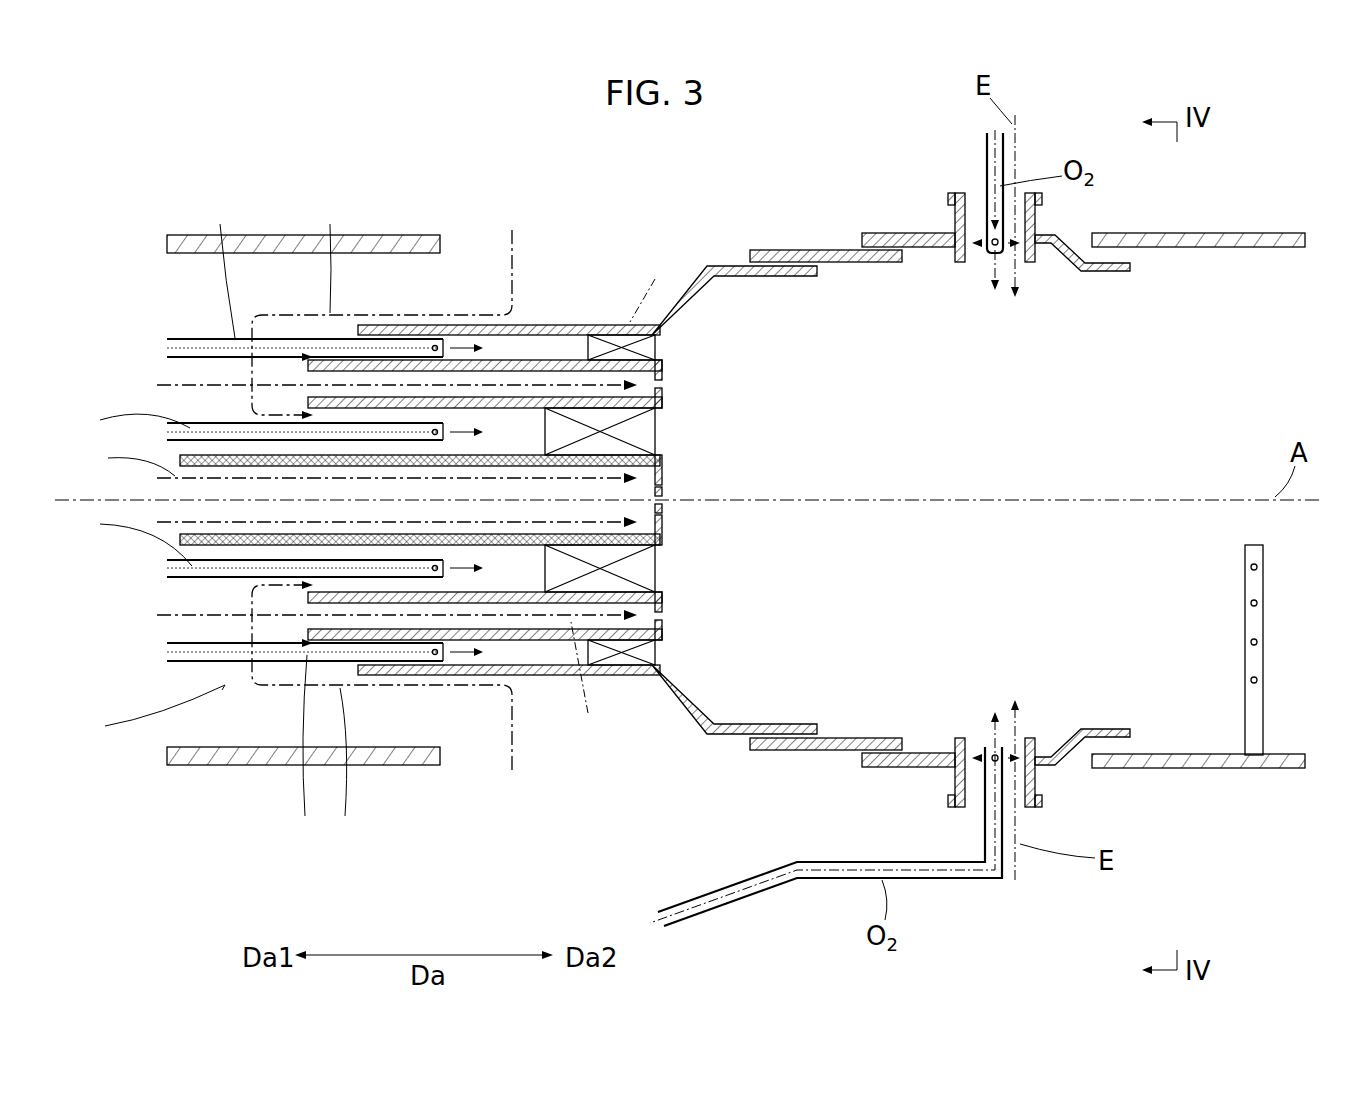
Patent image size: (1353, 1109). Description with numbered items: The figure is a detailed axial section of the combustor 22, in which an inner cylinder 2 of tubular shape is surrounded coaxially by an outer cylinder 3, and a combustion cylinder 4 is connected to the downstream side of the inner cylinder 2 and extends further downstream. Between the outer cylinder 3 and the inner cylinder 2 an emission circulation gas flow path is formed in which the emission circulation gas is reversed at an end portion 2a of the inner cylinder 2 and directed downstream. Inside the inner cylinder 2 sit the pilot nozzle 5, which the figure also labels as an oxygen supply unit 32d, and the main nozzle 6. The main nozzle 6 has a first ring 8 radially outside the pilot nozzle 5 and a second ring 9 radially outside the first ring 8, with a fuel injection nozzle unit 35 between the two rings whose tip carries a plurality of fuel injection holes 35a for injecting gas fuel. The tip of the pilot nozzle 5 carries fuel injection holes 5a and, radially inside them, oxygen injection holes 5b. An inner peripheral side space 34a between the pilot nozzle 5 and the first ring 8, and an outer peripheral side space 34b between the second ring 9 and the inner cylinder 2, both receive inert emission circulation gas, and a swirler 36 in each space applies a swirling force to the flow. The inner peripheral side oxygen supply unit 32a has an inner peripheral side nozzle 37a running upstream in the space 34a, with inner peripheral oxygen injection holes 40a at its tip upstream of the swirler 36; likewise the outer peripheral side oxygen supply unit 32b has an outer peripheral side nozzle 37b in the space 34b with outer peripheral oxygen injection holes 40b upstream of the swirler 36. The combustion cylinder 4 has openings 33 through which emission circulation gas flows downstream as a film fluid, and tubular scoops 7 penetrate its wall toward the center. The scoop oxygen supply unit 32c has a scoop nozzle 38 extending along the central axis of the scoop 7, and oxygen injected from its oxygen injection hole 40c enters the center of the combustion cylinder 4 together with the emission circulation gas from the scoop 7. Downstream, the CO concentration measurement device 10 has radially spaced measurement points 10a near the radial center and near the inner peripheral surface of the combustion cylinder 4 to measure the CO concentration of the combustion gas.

The combustor 22 is at (125, 178).
The outer cylinder 3 is at (215, 765).
The outer peripheral side nozzle 37b is at (294, 304).
The inner peripheral side nozzle 37a is at (190, 578).
The inner peripheral side oxygen supply unit 32a is at (211, 413).
The outer peripheral side oxygen supply unit 32b is at (288, 326).
The scoop oxygen supply unit 32c is at (909, 517).
The fourth inlet passage 32d is at (397, 500).
The inner peripheral oxygen injection holes 40a is at (470, 572).
The outer peripheral oxygen injection holes 40b is at (440, 345).
The oxygen injection hole 40c is at (990, 248).
The end portion of the inner cylinder 2a is at (362, 325).
The inner cylinder 2 is at (604, 672).
The fuel injection nozzle unit 35 is at (580, 458).
The fuel injection holes 35a is at (670, 385).
The second ring 9 is at (520, 642).
The swirler 36 is at (670, 345).
The pilot nozzle 5 is at (664, 420).
The fuel injection holes 5a is at (668, 478).
The oxygen injection holes 5b is at (668, 502).
The first ring 8 is at (625, 648).
The inner peripheral side space 34a is at (500, 437).
The outer peripheral side space 34b is at (495, 655).
The main nozzle 6 is at (516, 342).
The openings 33 is at (770, 250).
The combustion cylinder 4 is at (1200, 233).
The scoop 7 is at (957, 226).
The scoop nozzle 38 is at (987, 183).
The CO concentration measurement device 10 is at (1257, 645).
The measurement points 10a is at (1250, 567).